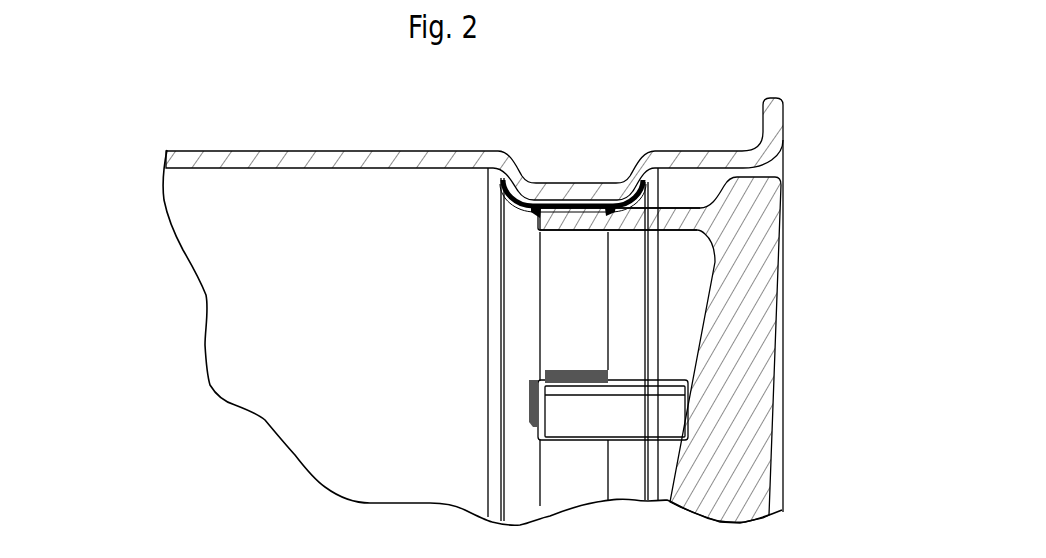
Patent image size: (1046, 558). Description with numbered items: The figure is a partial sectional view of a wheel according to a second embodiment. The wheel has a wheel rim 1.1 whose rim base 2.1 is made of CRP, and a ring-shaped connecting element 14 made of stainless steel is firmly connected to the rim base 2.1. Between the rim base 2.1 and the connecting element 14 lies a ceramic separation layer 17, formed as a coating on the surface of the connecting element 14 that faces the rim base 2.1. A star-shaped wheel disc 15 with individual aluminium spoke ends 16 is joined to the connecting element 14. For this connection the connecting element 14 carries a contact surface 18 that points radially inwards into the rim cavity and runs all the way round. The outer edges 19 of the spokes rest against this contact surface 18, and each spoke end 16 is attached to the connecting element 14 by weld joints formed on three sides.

The wheel rim 1.1 is at (809, 57).
The rim base 2.1 is at (293, 149).
The ring-shaped connecting element 14 is at (523, 345).
The star-shaped wheel disc 15 is at (730, 332).
The spoke ends 16 is at (607, 220).
The separation layer 17 is at (523, 260).
The contact surface 18 is at (522, 263).
The outer edges of the spokes 19 is at (573, 212).